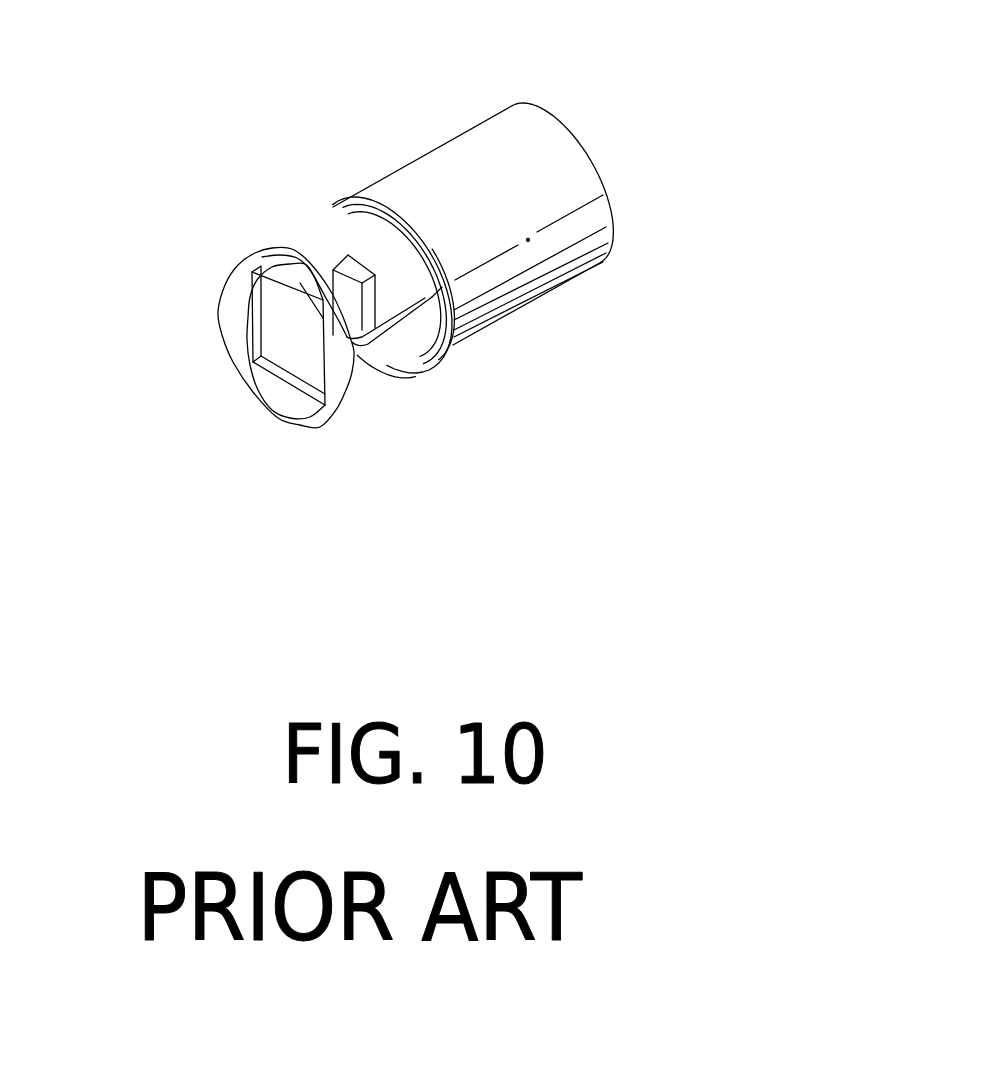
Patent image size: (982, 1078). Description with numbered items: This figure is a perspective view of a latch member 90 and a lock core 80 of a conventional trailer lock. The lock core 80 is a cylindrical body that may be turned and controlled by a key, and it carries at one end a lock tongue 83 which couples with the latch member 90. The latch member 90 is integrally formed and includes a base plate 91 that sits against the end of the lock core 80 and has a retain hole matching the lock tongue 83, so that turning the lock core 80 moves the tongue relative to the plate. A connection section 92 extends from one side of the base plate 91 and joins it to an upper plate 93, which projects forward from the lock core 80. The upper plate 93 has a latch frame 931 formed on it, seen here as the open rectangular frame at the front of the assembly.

The lock core 80 is at (455, 168).
The base plate 91 is at (327, 230).
The latch member 90 is at (288, 349).
The upper plate 93 is at (233, 323).
The latch frame 931 is at (295, 357).
The connection section 92 is at (368, 367).
The lock tongue 83 is at (353, 298).